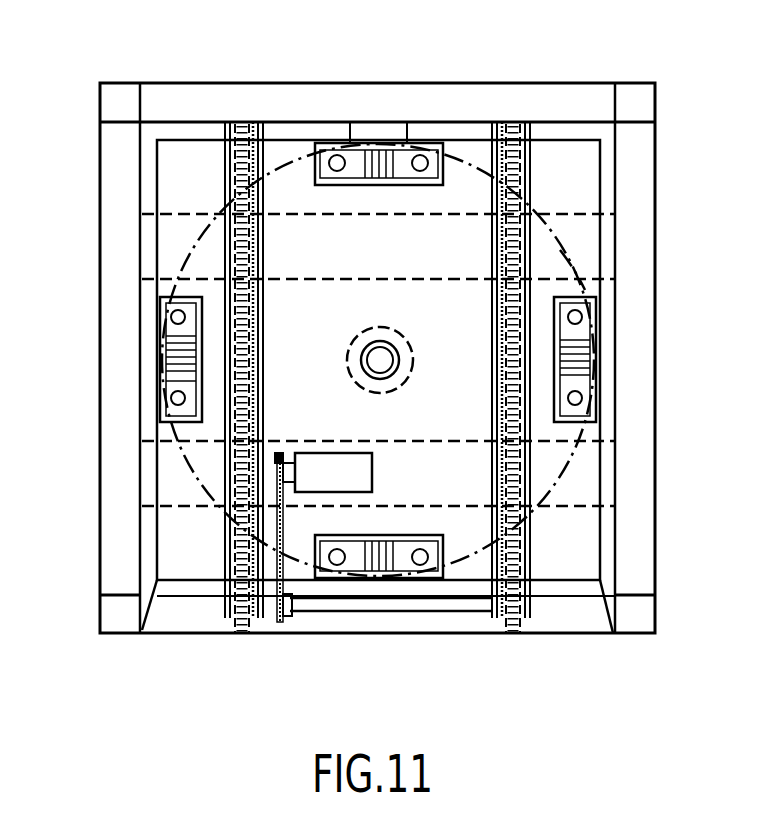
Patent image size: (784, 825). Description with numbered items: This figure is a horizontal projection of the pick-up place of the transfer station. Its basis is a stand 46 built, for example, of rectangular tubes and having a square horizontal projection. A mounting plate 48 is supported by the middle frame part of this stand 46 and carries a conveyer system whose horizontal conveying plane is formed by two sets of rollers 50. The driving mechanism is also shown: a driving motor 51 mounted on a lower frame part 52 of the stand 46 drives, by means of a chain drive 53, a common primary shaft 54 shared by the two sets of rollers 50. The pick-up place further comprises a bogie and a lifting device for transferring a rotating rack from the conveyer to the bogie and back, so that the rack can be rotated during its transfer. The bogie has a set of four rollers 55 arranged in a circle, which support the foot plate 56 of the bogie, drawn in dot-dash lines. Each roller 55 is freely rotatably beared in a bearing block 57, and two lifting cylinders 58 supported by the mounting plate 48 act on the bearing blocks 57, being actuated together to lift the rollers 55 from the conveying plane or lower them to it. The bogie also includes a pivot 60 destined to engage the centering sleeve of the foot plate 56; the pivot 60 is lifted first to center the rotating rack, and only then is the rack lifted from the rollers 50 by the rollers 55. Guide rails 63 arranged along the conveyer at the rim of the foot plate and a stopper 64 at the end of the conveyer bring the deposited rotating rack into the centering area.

The stand 46 is at (663, 298).
The mounting plate 48 is at (602, 186).
The set of rollers 50 is at (241, 128).
The driving motor 51 is at (327, 470).
The lower frame part 52 is at (567, 491).
The chain drive 53 is at (281, 620).
The common primary shaft 54 is at (420, 608).
The rollers 55 is at (378, 150).
The foot plate 56 is at (575, 270).
The bearing block 57 is at (157, 387).
The lifting cylinder 58 is at (157, 311).
The pivot 60 is at (385, 356).
The guide rails 63 is at (148, 556).
The stopper 64 is at (355, 133).